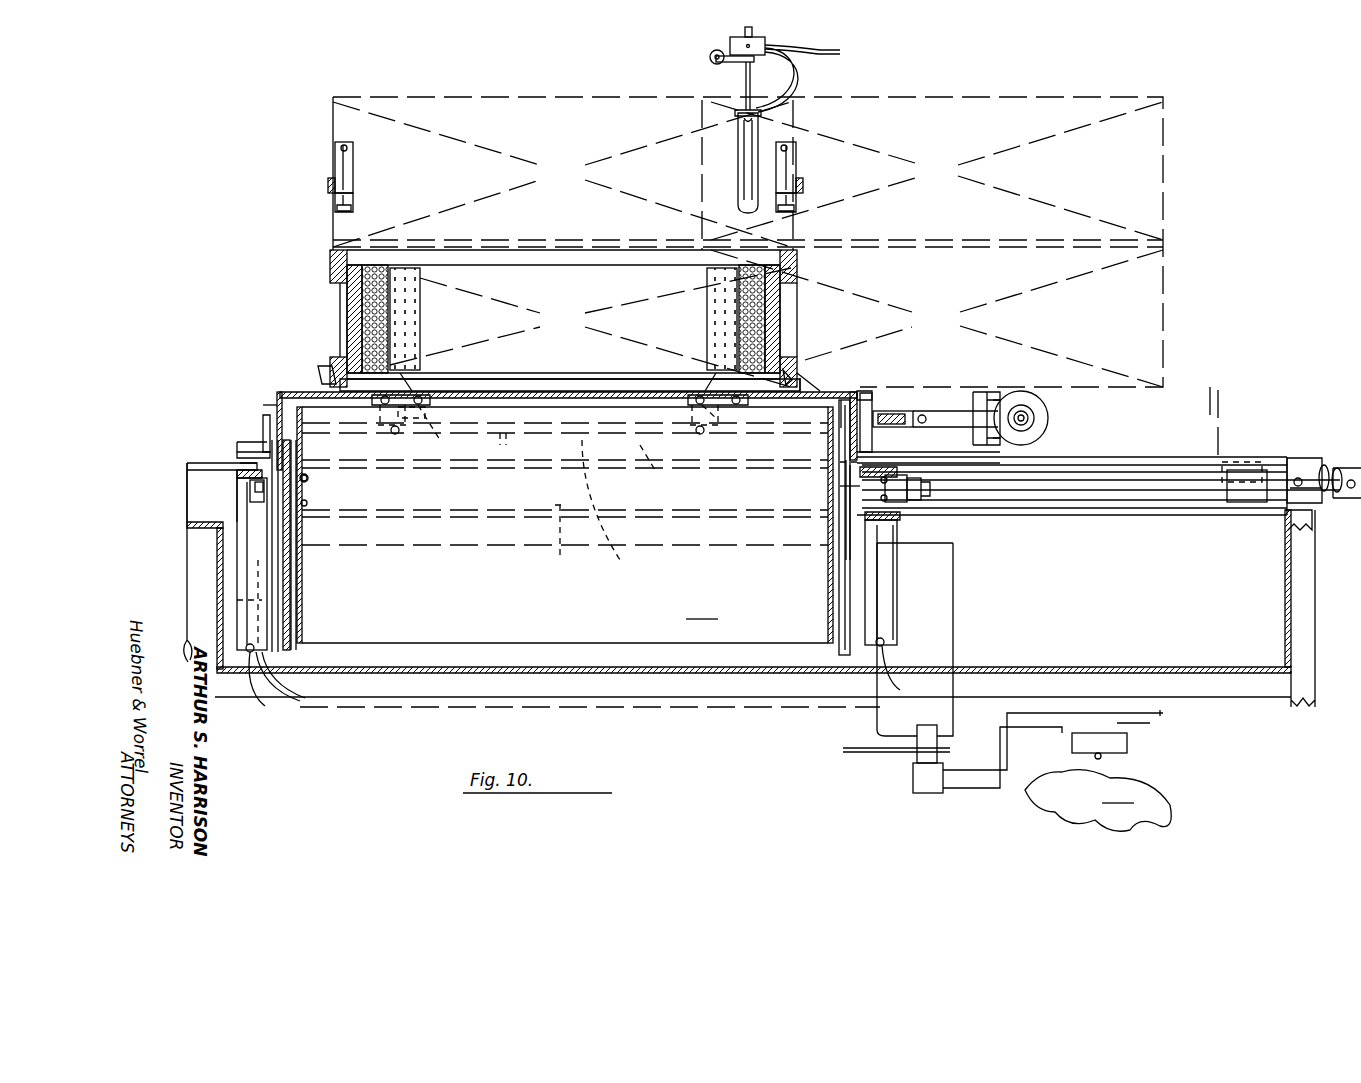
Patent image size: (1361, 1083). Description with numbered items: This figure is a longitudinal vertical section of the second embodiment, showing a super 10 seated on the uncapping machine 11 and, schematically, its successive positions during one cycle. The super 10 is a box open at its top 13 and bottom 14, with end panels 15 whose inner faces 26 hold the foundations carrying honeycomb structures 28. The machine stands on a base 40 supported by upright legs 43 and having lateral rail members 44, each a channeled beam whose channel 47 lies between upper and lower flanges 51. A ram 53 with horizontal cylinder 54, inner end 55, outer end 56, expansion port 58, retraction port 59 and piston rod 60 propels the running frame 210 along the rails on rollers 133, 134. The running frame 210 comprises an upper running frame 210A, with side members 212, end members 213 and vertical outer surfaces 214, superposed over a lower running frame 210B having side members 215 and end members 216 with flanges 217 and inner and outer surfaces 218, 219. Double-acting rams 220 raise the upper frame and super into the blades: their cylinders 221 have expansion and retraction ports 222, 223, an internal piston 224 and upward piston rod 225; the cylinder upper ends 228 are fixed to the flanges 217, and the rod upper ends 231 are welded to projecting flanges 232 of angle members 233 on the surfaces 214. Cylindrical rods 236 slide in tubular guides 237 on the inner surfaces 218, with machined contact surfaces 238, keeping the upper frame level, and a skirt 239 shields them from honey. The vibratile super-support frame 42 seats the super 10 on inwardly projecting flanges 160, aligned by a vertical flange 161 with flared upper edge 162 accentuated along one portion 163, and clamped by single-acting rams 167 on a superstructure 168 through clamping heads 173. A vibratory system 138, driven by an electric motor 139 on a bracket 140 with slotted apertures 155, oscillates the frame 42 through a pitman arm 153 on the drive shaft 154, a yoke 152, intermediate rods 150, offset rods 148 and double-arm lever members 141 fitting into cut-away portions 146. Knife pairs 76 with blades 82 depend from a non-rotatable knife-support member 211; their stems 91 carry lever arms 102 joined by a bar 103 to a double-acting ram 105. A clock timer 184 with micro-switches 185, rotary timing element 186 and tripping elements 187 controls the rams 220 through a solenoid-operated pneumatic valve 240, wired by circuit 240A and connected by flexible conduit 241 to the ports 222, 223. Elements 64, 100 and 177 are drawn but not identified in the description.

The super 10 is at (325, 268).
The honeycomb uncapping machine 11 is at (476, 250).
The top 13 is at (552, 250).
The bottom 14 is at (566, 382).
The end panels 15 is at (352, 302).
The inner faces 26 is at (402, 300).
The honeycomb structures 28 is at (378, 262).
The base 40 is at (1328, 644).
The vibratile super-support frame 42 is at (274, 392).
The upright legs 43 is at (1312, 702).
The lateral rail members 44 is at (1165, 457).
The channel 47 is at (1173, 475).
The upper and lower flanges 51 is at (1137, 470).
The ram 53 is at (1322, 466).
The horizontal cylinder 54 is at (1318, 512).
The inner end of ram cylinder 55 is at (1296, 465).
The outer end of ram cylinder 56 is at (1349, 468).
The expansion port 58 is at (1350, 500).
The retraction port 59 is at (1282, 500).
The piston rod 60 is at (1102, 490).
The base plate 64 is at (1195, 667).
The knife pairs 76 is at (728, 166).
The blades 82 is at (740, 185).
The stem 91 is at (745, 90).
The wires 100 is at (803, 78).
The lever arms 102 is at (722, 61).
The elongated bar 103 is at (711, 56).
The double-acting ram 105 is at (717, 50).
The roller 133 is at (250, 500).
The roller 134 is at (300, 500).
The vibratory system 138 is at (638, 440).
The electric motor 139 is at (1030, 408).
The bracket 140 is at (997, 420).
The double-arm lever members 141 is at (406, 376).
The cut-away portion 146 is at (412, 432).
The reciprocative rods 148 is at (508, 440).
The intermediate rods 150 is at (832, 400).
The transverse yoke 152 is at (925, 432).
The pitman arm 153 is at (980, 410).
The motor drive shaft 154 is at (1040, 422).
The slotted apertures 155 is at (910, 416).
The inwardly projecting flanges 160 is at (318, 397).
The rectangular vertical flange 161 is at (803, 388).
The outwardly flared upper edge 162 is at (792, 372).
The flange portion 163 is at (328, 378).
The single-acting rams 167 is at (335, 160).
The superstructure 168 is at (328, 188).
The clamping head 173 is at (336, 210).
The stop 177 is at (422, 394).
The clock timer 184 is at (1178, 812).
The micro-switches 185 is at (1127, 742).
The rotary timing element 186 is at (1098, 801).
The tripping elements 187 is at (1027, 790).
The running frame 210 is at (265, 398).
The upper running frame 210A is at (254, 417).
The lower running frame 210B is at (309, 479).
The non-rotatable knife-support member 211 is at (765, 40).
The side members 212 is at (613, 510).
The end members 213 is at (278, 393).
The outer surfaces 214 is at (256, 427).
The side members 215 is at (564, 543).
The end members 216 is at (288, 523).
The flange 217 is at (236, 474).
The inner surfaces 218 is at (857, 500).
The outer surfaces 219 is at (294, 537).
The double-acting rams 220 is at (226, 556).
The cylinders 221 is at (190, 524).
The expansion ports 222 is at (593, 689).
The retraction ports 223 is at (253, 486).
The internal piston 224 is at (290, 648).
The piston rod 225 is at (237, 598).
The upper ends of cylinders 228 is at (235, 490).
The upper ends of piston rods 231 is at (237, 463).
The projecting flanges 232 is at (237, 455).
The angle members 233 is at (266, 442).
The cylindrical rods 236 is at (271, 575).
The tubular guides 237 is at (840, 487).
The contact surfaces 238 is at (838, 462).
The skirt 239 is at (302, 622).
The four-way solenoid-operated pneumatic valve 240 is at (913, 770).
The electrical circuit 240A is at (1055, 732).
The flexible conduit 241 is at (958, 549).